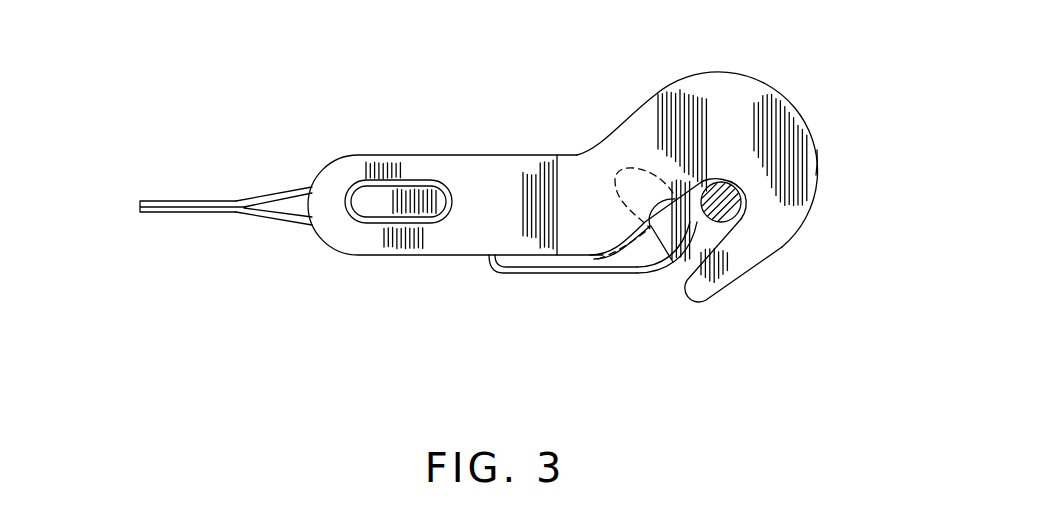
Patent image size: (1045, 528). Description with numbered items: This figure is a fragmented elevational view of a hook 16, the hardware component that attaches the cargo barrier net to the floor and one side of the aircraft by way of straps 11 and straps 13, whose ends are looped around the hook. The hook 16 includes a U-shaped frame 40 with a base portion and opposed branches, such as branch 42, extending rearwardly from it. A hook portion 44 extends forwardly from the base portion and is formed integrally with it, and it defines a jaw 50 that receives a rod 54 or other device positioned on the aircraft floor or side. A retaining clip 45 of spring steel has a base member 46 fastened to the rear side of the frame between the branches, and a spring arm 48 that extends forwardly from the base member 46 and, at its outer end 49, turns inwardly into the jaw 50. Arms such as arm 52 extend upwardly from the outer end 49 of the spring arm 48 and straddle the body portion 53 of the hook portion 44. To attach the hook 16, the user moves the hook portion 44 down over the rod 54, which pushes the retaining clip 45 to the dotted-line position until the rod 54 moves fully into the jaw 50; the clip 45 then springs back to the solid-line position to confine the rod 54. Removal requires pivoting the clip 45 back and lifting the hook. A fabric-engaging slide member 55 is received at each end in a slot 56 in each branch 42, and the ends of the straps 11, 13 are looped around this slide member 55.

The straps 11 is at (205, 241).
The straps 13 is at (150, 220).
The hook 16 is at (809, 94).
The U-shaped frame 40 is at (468, 142).
The branch 42 is at (438, 237).
The hook portion 44 is at (825, 154).
The retaining clip 45 is at (616, 267).
The base member 46 is at (498, 268).
The spring arm 48 is at (640, 277).
The outer end of spring arm 49 is at (713, 281).
The jaw 50 is at (722, 239).
The arm 52 is at (742, 266).
The body portion 53 is at (673, 106).
The rod 54 is at (746, 198).
The fabric-engaging slide member 55 is at (390, 202).
The slot 56 is at (358, 230).